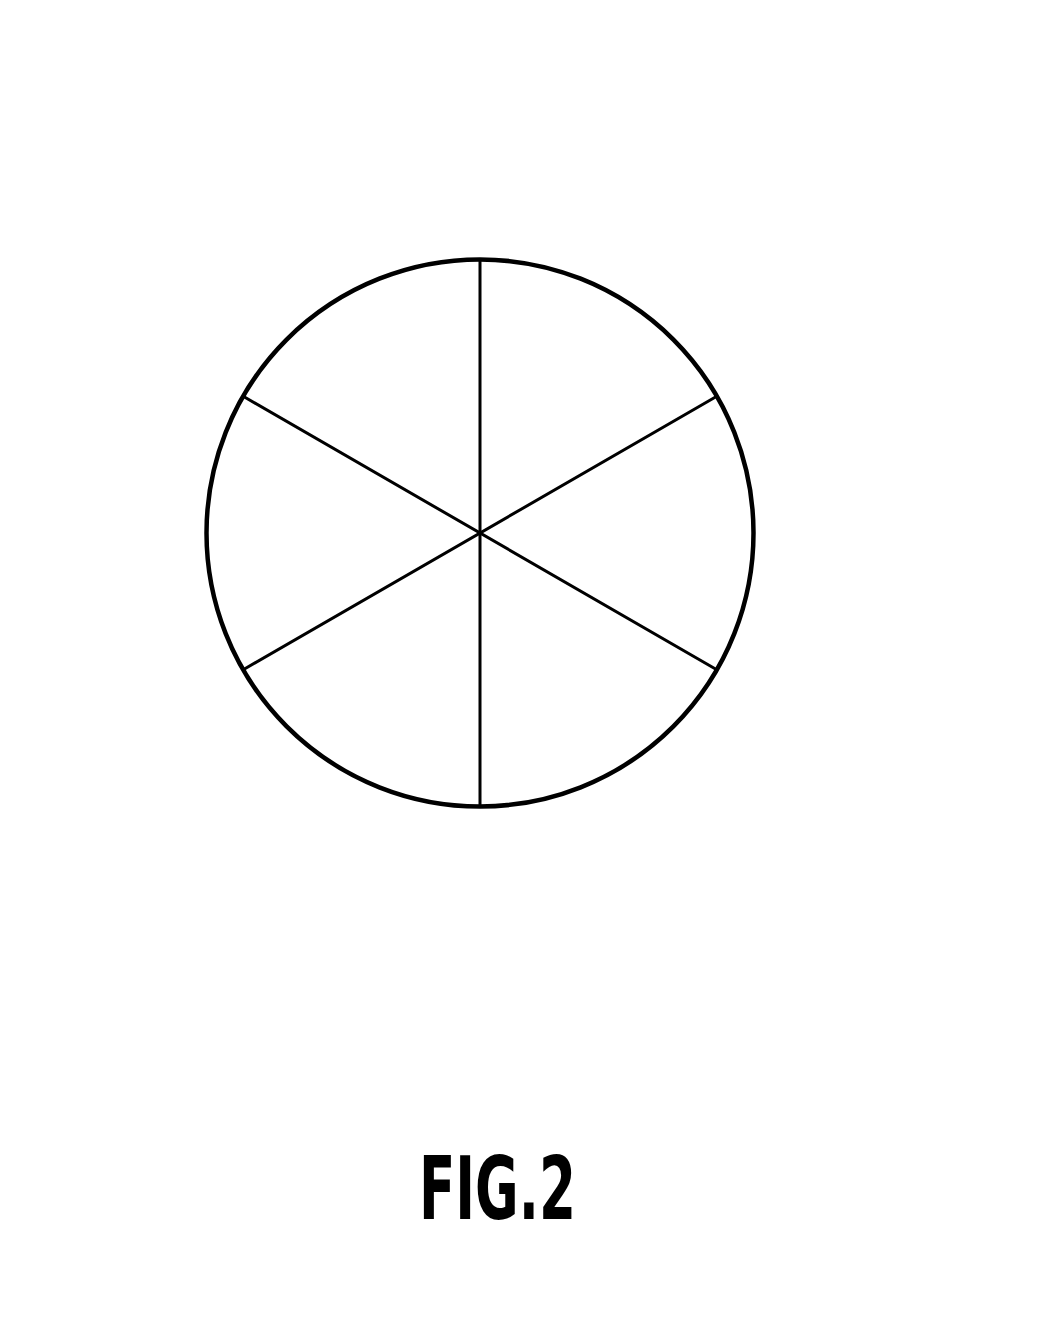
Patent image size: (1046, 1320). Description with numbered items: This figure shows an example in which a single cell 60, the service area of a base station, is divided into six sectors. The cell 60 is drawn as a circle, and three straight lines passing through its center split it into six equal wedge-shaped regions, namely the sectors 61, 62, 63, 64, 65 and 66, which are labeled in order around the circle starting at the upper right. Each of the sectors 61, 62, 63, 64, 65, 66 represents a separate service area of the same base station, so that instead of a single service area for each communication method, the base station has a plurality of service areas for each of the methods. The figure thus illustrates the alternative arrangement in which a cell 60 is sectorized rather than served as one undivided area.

The cell 60 is at (542, 198).
The sector 61 is at (600, 293).
The sector 62 is at (757, 553).
The sector 63 is at (607, 780).
The sector 64 is at (350, 777).
The sector 65 is at (205, 550).
The sector 66 is at (347, 290).